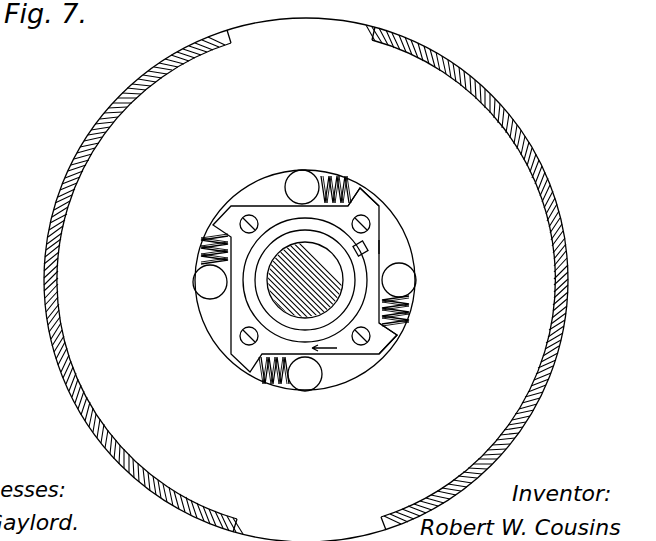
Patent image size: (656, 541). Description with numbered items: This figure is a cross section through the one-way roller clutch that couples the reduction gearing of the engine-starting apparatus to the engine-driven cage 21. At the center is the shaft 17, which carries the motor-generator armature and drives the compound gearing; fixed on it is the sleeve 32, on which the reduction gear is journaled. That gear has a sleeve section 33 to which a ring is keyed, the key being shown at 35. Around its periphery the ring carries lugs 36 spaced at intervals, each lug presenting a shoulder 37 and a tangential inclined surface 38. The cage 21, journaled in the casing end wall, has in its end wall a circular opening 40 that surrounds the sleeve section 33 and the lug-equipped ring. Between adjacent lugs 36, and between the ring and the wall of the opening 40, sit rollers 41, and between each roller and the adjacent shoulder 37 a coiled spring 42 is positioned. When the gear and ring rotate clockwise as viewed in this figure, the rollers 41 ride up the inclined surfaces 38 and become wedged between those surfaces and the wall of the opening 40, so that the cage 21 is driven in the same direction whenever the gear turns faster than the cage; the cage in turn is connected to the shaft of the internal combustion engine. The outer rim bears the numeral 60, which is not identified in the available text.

The shaft 17 is at (320, 300).
The cage 21 is at (561, 218).
The sleeve 32 is at (277, 243).
The sleeve section 33 is at (252, 300).
The key 35 is at (364, 246).
The lugs 36 is at (368, 203).
The shoulders 37 is at (352, 200).
The tangential inclined surfaces 38 is at (383, 247).
The circular opening 40 is at (392, 339).
The rollers 41 is at (297, 180).
The coiled springs 42 is at (333, 172).
The rim segment end 60 is at (374, 30).